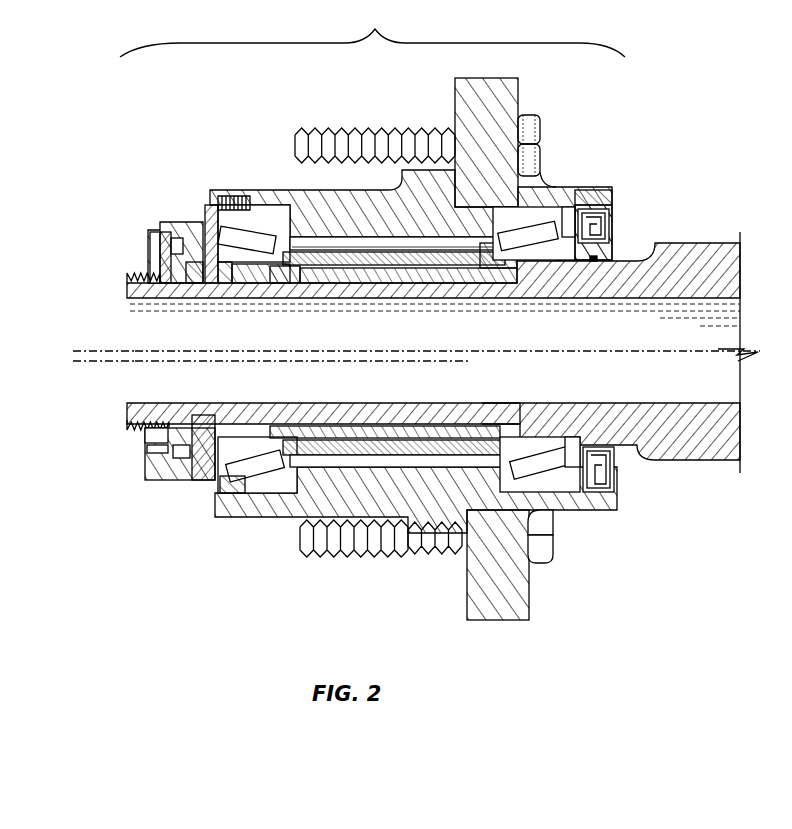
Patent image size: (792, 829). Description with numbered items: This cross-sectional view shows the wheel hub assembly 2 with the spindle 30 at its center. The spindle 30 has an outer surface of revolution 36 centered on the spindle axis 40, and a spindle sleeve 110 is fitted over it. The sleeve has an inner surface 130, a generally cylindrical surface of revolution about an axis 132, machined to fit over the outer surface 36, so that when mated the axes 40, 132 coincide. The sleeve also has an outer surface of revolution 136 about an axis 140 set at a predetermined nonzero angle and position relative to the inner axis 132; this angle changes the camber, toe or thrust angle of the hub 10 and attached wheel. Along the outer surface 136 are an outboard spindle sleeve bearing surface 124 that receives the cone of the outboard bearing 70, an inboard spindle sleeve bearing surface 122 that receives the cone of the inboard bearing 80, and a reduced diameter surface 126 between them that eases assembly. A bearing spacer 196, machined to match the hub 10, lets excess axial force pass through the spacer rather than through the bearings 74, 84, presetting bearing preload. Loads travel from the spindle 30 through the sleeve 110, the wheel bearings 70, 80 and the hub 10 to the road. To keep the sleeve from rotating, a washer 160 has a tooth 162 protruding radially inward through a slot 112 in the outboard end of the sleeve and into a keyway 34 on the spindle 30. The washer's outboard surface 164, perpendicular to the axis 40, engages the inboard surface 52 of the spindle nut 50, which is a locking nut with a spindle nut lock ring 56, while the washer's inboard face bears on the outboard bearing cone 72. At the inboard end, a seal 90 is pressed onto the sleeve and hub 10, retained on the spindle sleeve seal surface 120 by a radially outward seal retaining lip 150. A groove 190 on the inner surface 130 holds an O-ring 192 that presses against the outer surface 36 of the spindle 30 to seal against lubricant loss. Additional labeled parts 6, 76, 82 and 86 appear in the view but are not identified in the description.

The wheel hub assembly 2 is at (372, 30).
The shaft 6 is at (698, 458).
The hub 10 is at (482, 620).
The spindle 30 is at (502, 412).
The keyway 34 is at (128, 282).
The outer surface of revolution 36 is at (338, 268).
The axis 40 is at (90, 350).
The spindle nut 50 is at (188, 222).
The inboard surface 52 is at (230, 428).
The spindle nut lock ring 56 is at (158, 252).
The outboard bearing 70 is at (243, 232).
The outboard bearing cone 72 is at (285, 435).
The bearing 74 is at (248, 470).
The bearing cage 76 is at (240, 490).
The inboard bearing 80 is at (563, 210).
The spacer 82 is at (580, 440).
The bearing 84 is at (528, 455).
The nut 86 is at (553, 512).
The seal 90 is at (612, 205).
The spindle sleeve 110 is at (395, 262).
The slot 112 is at (226, 284).
The spindle sleeve seal surface 120 is at (523, 262).
The inboard spindle sleeve bearing surface 122 is at (505, 266).
The outboard spindle sleeve bearing surface 124 is at (293, 267).
The reduced diameter surface 126 is at (388, 438).
The inner surface 130 is at (252, 283).
The axis 132 is at (112, 348).
The outer surface of revolution 136 is at (432, 445).
The axis 140 is at (93, 363).
The seal retaining lip 150 is at (608, 222).
The washer 160 is at (198, 225).
The tooth 162 is at (210, 287).
The outboard surface 164 is at (207, 472).
The groove 190 is at (605, 250).
The O-ring 192 is at (597, 262).
The bearing spacer 196 is at (333, 437).